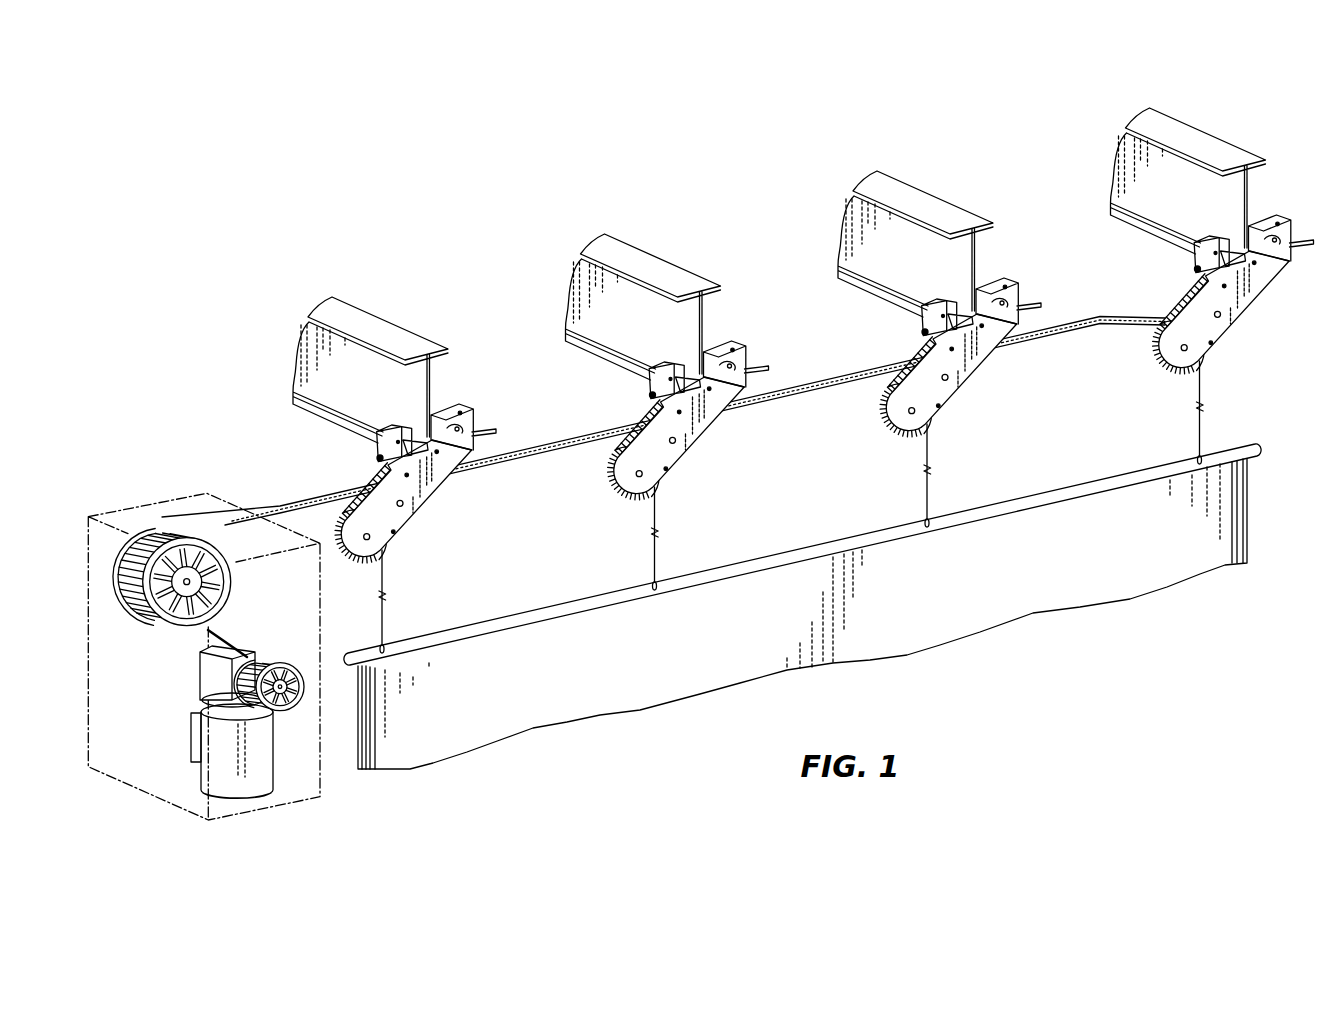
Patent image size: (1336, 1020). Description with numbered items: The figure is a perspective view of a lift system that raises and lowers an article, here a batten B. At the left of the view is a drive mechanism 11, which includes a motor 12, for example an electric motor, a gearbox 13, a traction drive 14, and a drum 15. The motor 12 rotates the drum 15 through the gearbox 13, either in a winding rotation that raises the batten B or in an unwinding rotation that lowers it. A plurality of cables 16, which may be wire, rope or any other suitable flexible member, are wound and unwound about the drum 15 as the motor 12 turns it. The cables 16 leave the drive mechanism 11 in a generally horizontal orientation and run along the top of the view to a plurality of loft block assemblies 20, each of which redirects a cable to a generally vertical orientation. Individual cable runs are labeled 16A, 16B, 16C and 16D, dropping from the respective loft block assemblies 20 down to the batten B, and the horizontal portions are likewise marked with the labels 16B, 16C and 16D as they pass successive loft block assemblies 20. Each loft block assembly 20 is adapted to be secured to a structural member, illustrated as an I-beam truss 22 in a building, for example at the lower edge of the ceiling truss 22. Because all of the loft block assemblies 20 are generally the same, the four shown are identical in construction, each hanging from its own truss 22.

The drive mechanism 11 is at (158, 798).
The motor 12 is at (275, 767).
The gearbox 13 is at (202, 668).
The traction drive 14 is at (127, 605).
The drum 15 is at (310, 658).
The cables 16 is at (223, 637).
The cable 16A is at (386, 575).
The cable 16B is at (280, 500).
The cable 16C is at (817, 396).
The cable 16D is at (603, 434).
The loft block assemblies 20 is at (478, 388).
The I-beam truss 22 is at (355, 313).
The batten B is at (523, 618).